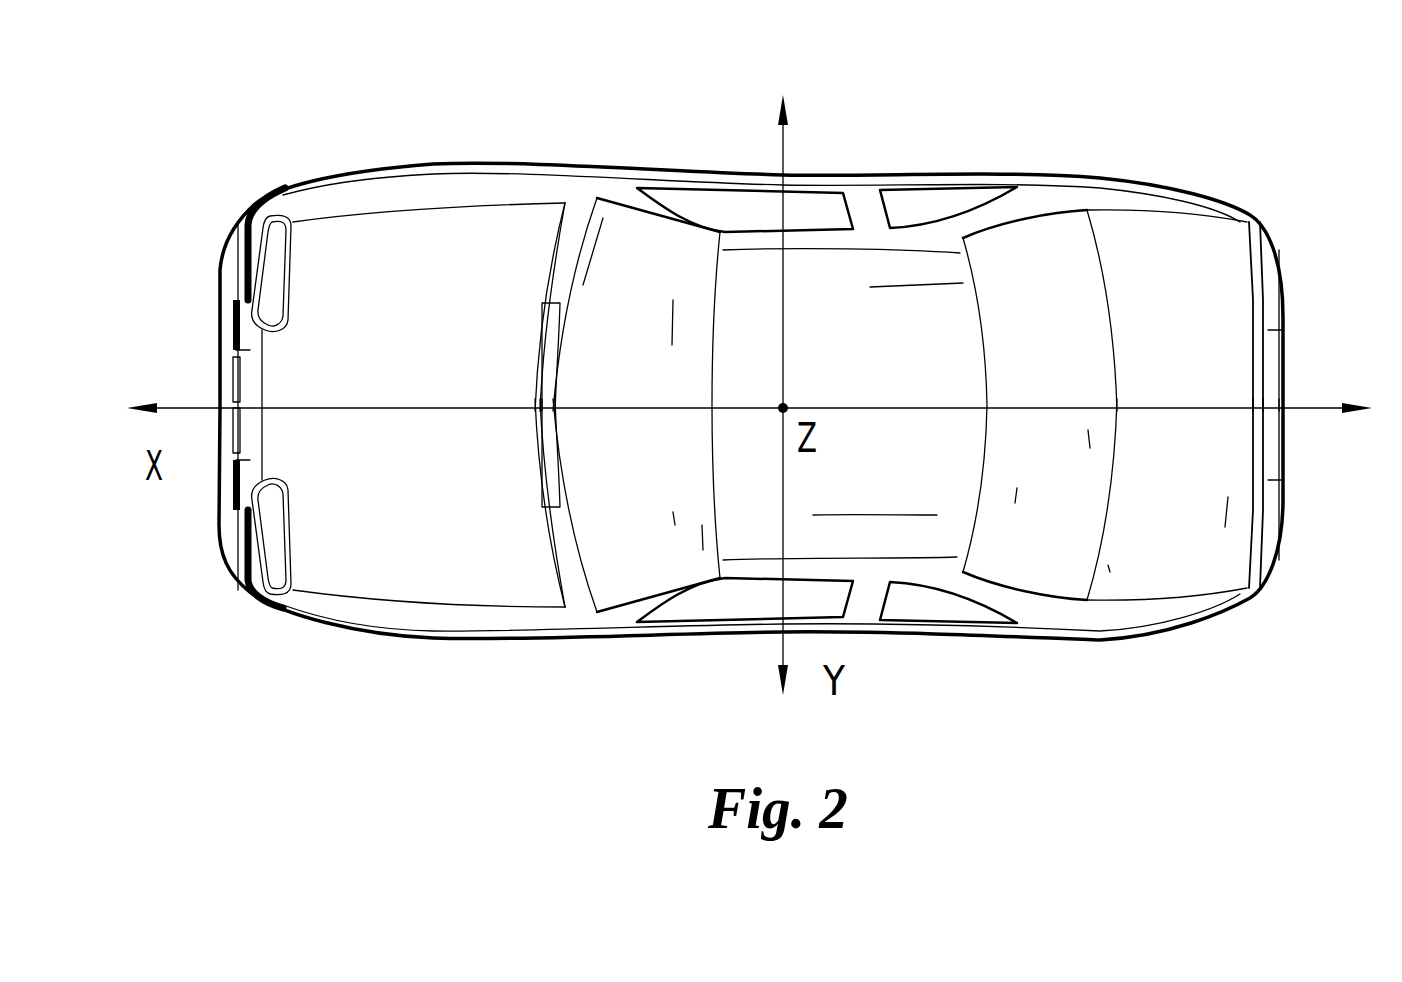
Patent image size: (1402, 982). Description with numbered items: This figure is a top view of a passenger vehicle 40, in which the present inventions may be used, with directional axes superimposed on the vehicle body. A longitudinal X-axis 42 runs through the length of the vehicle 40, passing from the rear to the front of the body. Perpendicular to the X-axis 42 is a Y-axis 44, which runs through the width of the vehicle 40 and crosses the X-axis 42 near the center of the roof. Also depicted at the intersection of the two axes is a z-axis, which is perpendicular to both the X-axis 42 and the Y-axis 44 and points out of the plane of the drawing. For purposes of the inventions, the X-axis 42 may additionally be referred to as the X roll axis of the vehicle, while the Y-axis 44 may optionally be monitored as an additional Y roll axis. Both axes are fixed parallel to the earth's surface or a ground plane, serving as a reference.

The passenger vehicle 40 is at (1235, 118).
The longitudinal X-axis 42 is at (396, 408).
The Y-axis 44 is at (785, 312).